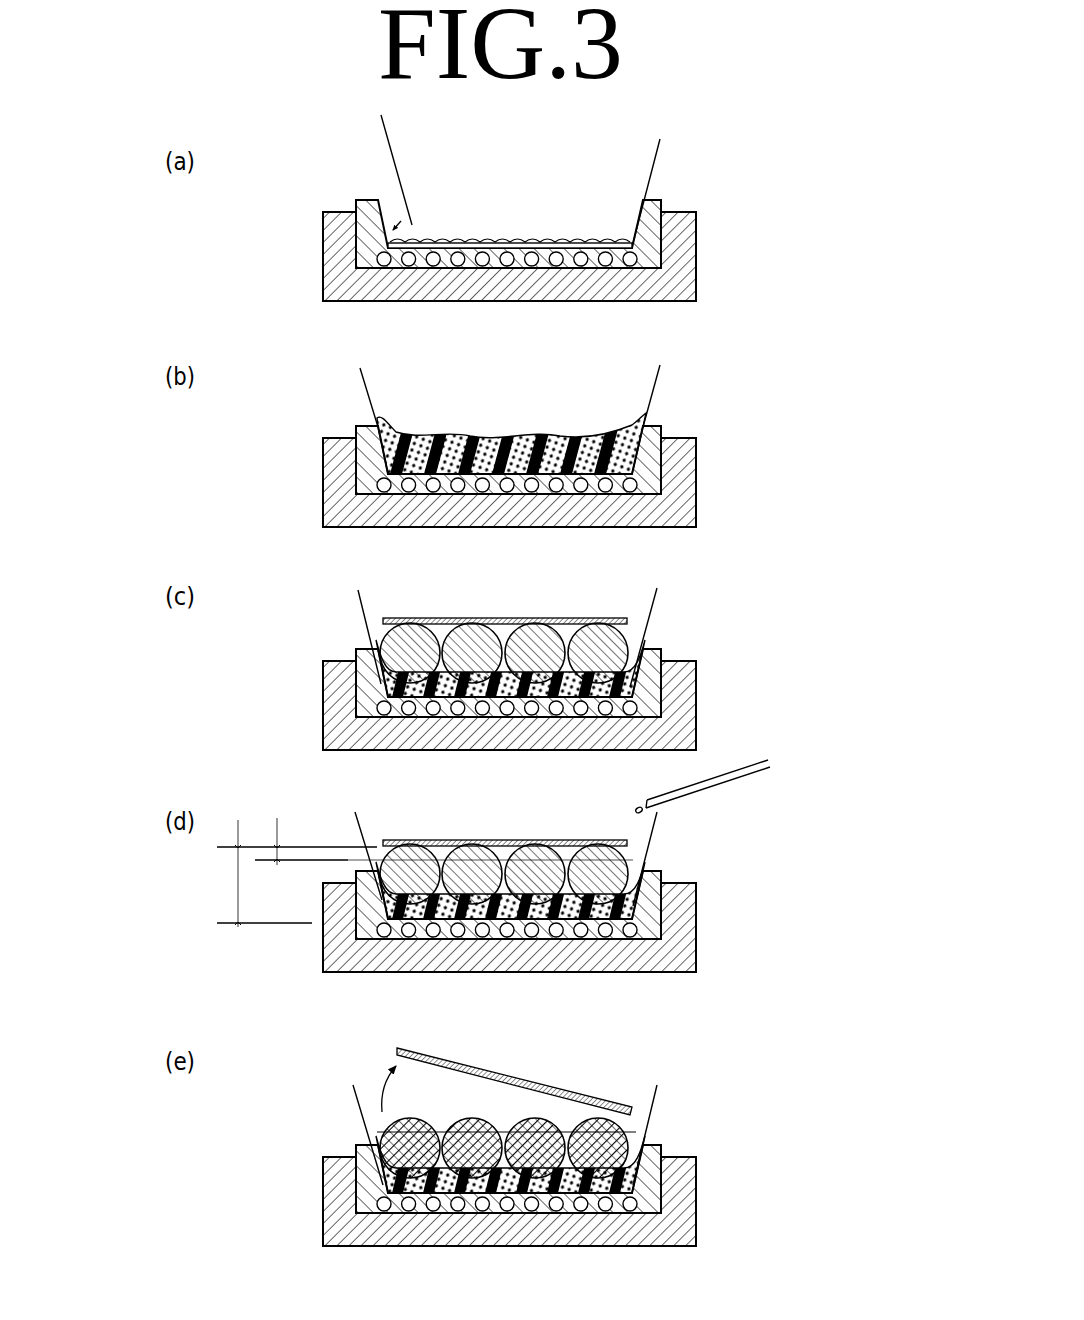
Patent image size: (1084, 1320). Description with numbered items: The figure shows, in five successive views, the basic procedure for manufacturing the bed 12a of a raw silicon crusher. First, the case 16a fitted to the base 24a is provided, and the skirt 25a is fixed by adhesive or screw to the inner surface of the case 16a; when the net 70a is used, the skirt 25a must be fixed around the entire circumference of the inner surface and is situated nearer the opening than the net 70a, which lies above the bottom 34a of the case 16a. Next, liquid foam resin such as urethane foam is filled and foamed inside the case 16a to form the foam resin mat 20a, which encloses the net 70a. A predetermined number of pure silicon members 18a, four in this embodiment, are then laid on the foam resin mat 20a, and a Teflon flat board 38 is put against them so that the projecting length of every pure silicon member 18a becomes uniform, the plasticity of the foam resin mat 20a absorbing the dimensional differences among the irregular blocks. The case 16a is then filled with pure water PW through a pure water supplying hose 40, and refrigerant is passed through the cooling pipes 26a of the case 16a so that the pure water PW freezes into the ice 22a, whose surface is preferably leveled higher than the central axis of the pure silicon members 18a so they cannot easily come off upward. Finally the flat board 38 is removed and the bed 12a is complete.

The bed 12a is at (497, 700).
The case 16a is at (565, 703).
The pure silicon member 18a is at (532, 647).
The foam resin mat 20a is at (512, 779).
The ice 22a is at (383, 1153).
The base 24a is at (549, 729).
The skirt 25a is at (535, 646).
The cooling pipe 26a is at (507, 772).
The bottom of the case 34a is at (525, 247).
The flat board 38 is at (493, 836).
The pure water supplying hose 40 is at (703, 792).
The net 70a is at (510, 658).
The pure water PW is at (635, 806).